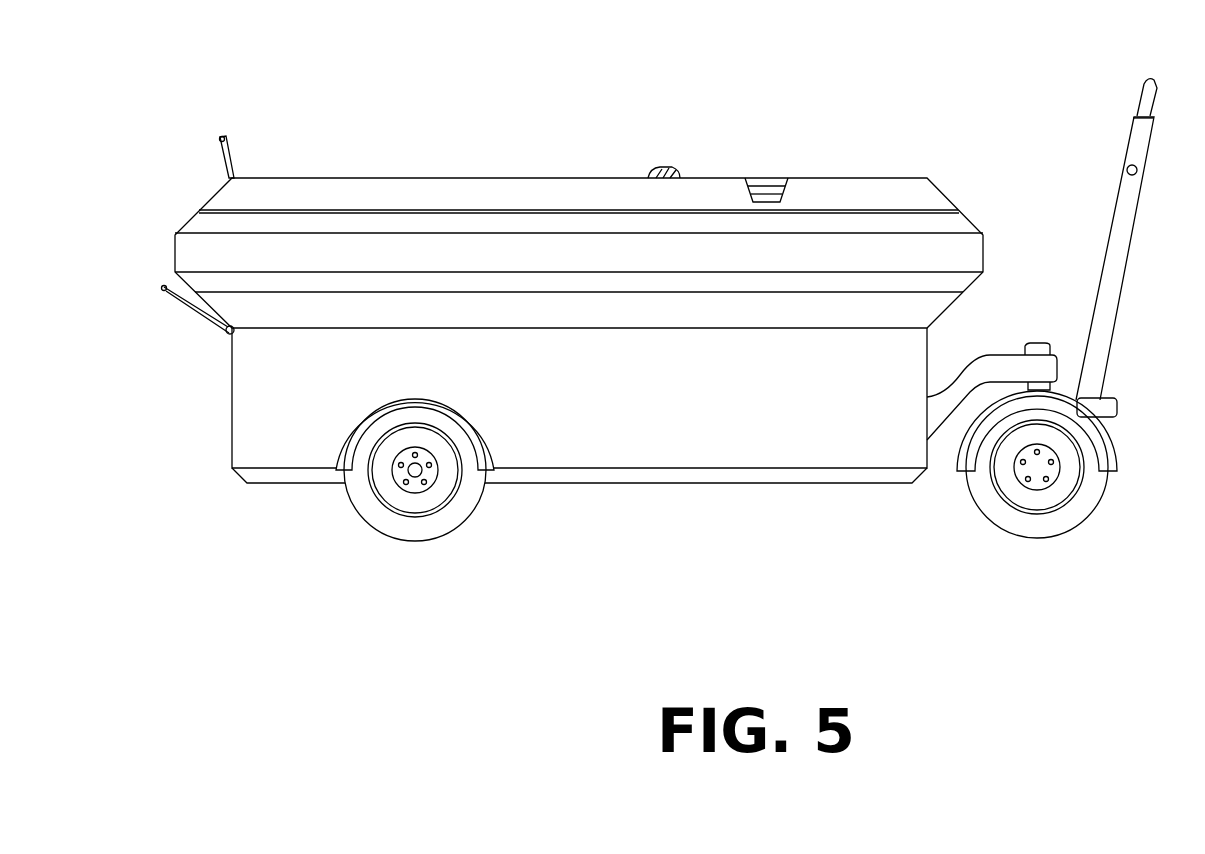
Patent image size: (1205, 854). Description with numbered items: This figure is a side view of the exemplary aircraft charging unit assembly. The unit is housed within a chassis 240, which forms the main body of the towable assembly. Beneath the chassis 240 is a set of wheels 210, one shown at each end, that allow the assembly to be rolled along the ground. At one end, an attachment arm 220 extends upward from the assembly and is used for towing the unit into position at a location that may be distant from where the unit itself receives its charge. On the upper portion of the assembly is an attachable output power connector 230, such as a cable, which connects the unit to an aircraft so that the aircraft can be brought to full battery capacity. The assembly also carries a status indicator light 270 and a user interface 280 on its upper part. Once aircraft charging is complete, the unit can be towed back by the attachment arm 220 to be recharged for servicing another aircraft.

The wheels 210 is at (457, 527).
The attachment arm 220 is at (1138, 142).
The output power connector 230 is at (705, 177).
The chassis 240 is at (833, 447).
The status indicator light 270 is at (528, 210).
The user interface 280 is at (225, 141).